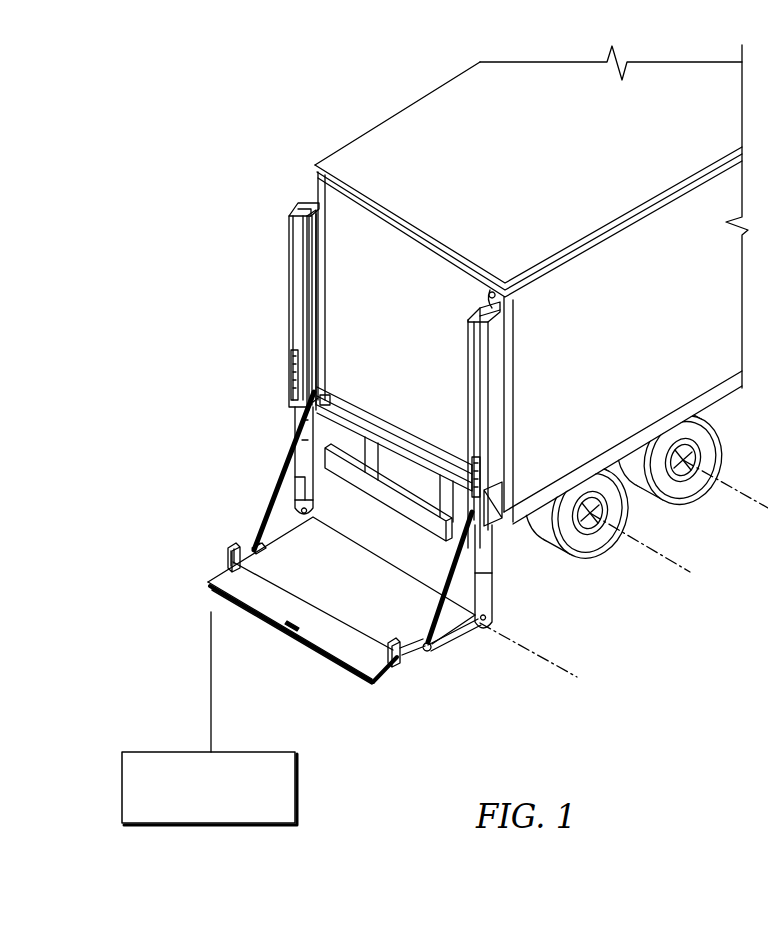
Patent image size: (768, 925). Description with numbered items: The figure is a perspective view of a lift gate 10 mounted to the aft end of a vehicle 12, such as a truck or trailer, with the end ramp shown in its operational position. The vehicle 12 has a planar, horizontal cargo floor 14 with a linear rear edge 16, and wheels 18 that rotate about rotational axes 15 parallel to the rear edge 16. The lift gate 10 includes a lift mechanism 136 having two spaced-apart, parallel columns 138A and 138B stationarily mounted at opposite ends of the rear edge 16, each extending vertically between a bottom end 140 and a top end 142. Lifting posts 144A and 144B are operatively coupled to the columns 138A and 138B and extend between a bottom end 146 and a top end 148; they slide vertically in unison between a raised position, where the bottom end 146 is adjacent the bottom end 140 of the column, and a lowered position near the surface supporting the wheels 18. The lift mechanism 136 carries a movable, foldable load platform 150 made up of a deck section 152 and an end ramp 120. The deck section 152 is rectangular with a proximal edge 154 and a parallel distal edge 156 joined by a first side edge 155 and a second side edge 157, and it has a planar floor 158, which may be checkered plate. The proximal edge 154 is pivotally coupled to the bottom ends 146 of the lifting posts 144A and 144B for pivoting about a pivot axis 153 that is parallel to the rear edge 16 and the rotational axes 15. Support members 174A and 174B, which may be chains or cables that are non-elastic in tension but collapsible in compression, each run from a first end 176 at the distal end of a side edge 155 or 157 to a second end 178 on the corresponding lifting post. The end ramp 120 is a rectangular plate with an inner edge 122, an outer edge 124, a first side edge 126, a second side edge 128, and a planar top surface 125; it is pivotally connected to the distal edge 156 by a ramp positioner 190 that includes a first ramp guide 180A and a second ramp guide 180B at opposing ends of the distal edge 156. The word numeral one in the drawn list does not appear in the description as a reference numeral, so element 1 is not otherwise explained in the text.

The vehicle 1 is at (752, 540).
The lift gate 10 is at (303, 178).
The vehicle 12 is at (456, 108).
The cargo floor 14 is at (328, 396).
The rotational axes 15 is at (643, 545).
The rear edge 16 is at (380, 440).
The wheels 18 is at (590, 545).
The end ramp 120 is at (333, 672).
The inner edge 122 is at (248, 592).
The outer edge 124 is at (318, 645).
The top surface 125 is at (354, 648).
The first side edge 126 is at (218, 578).
The second side edge 128 is at (375, 688).
The lift mechanism 136 is at (262, 289).
The column 138A is at (291, 250).
The column 138B is at (497, 366).
The bottom end 140 is at (293, 430).
The top end 142 is at (300, 209).
The lifting post 144A is at (403, 430).
The lifting post 144B is at (490, 606).
The bottom end 146 is at (312, 497).
The top end 148 is at (318, 322).
The load platform 150 is at (243, 463).
The deck section 152 is at (375, 588).
The pivot axis 153 is at (575, 677).
The proximal edge 154 is at (405, 590).
The first side edge 155 is at (283, 545).
The distal edge 156 is at (313, 600).
The second side edge 157 is at (440, 635).
The floor 158 is at (371, 616).
The support member 174A is at (283, 450).
The support member 174B is at (448, 628).
The first end 176 is at (424, 652).
The second end 178 is at (328, 402).
The first ramp guide 180A is at (218, 540).
The second ramp guide 180B is at (393, 666).
The ramp positioner 190 is at (222, 515).